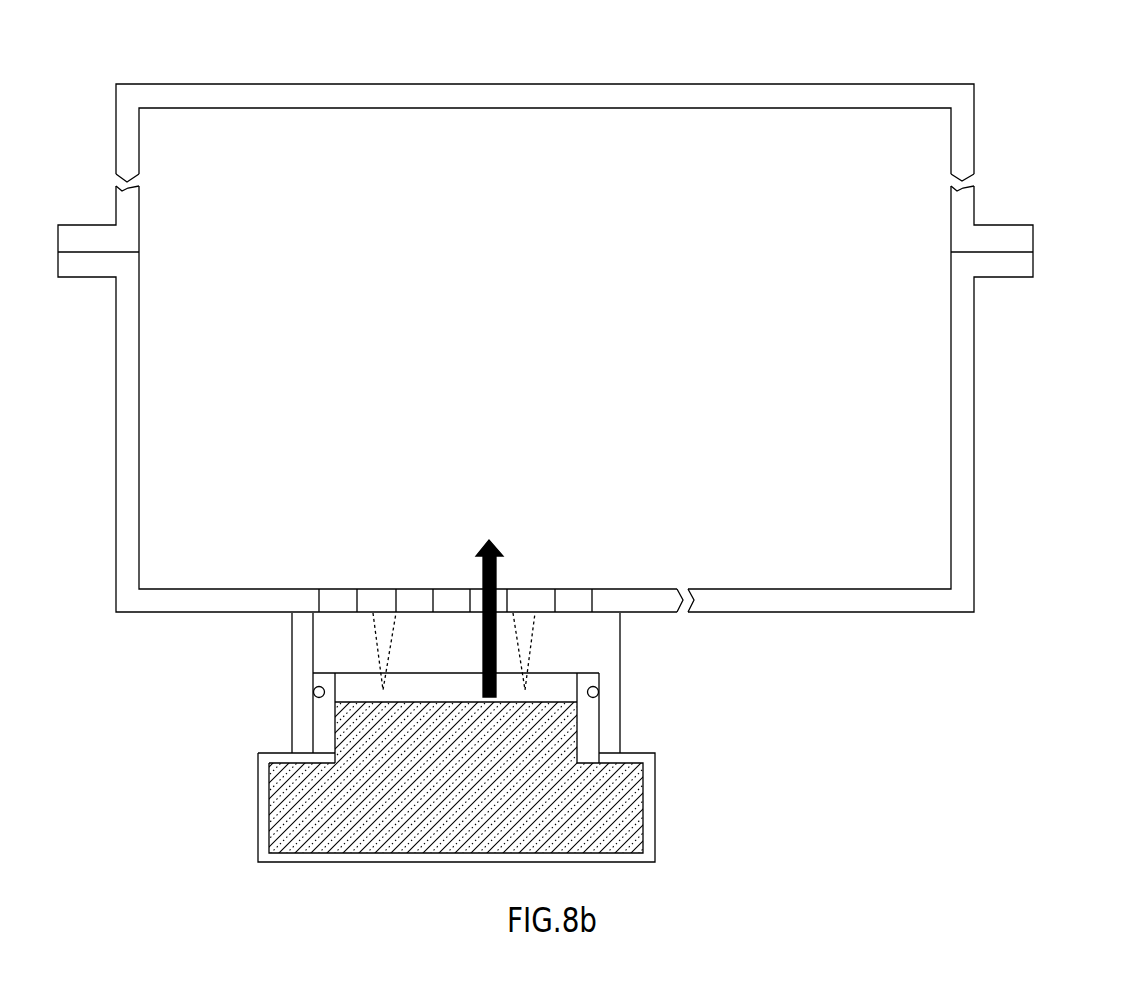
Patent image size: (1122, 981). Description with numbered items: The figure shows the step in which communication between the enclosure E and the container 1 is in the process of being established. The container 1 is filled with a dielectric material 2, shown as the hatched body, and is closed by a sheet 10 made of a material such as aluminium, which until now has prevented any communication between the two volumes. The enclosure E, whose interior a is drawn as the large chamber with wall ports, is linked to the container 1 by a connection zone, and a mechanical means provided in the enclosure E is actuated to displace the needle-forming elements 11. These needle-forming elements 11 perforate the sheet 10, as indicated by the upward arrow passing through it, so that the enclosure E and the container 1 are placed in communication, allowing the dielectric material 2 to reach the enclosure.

The enclosure E is at (981, 428).
The interior space of the enclosure a is at (258, 252).
The container 1 is at (653, 781).
The dielectric material 2 is at (416, 819).
The sheet 10 is at (353, 667).
The needle-forming elements 11 is at (542, 630).